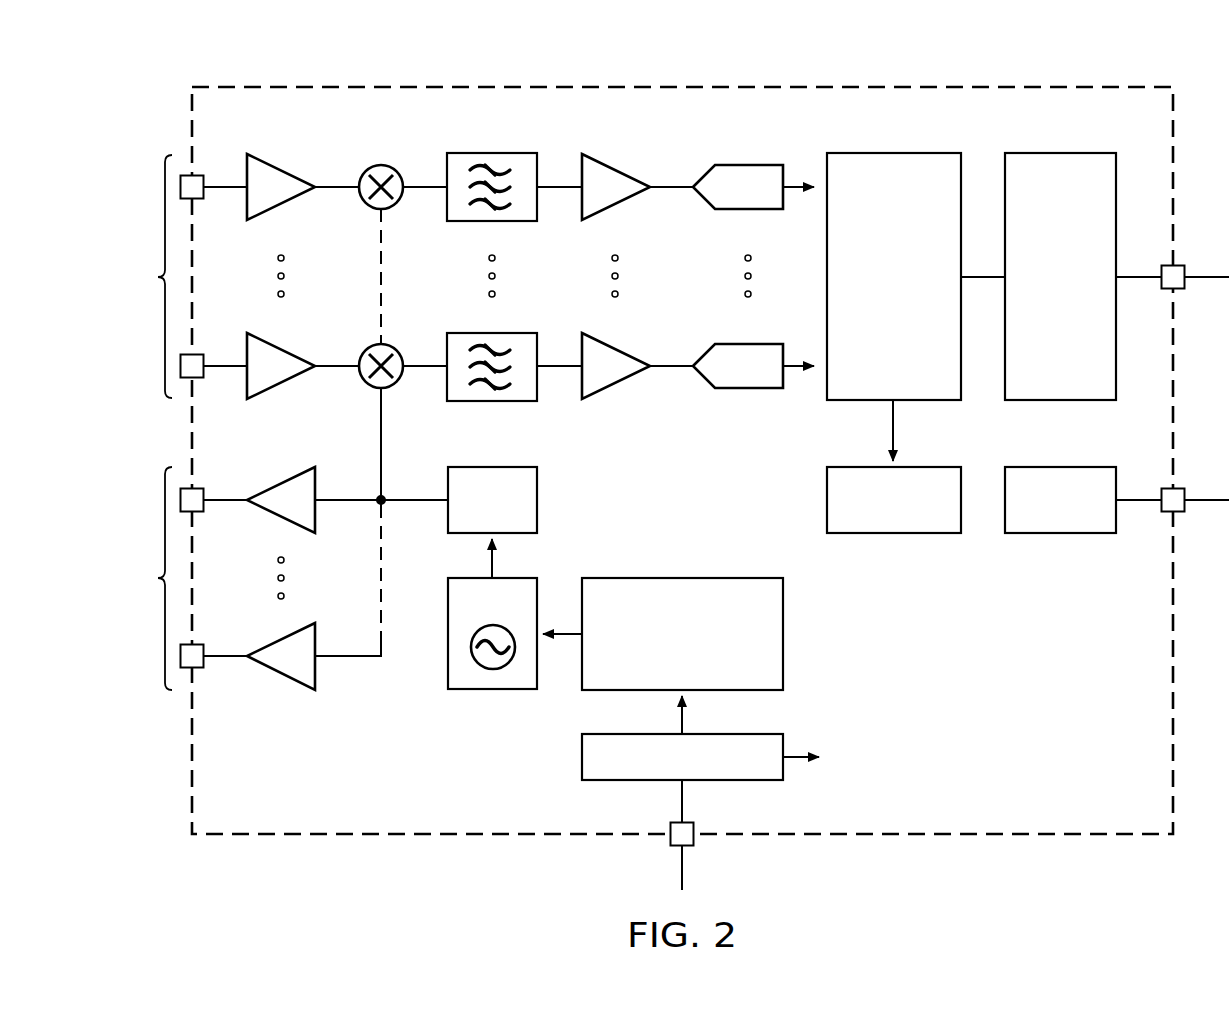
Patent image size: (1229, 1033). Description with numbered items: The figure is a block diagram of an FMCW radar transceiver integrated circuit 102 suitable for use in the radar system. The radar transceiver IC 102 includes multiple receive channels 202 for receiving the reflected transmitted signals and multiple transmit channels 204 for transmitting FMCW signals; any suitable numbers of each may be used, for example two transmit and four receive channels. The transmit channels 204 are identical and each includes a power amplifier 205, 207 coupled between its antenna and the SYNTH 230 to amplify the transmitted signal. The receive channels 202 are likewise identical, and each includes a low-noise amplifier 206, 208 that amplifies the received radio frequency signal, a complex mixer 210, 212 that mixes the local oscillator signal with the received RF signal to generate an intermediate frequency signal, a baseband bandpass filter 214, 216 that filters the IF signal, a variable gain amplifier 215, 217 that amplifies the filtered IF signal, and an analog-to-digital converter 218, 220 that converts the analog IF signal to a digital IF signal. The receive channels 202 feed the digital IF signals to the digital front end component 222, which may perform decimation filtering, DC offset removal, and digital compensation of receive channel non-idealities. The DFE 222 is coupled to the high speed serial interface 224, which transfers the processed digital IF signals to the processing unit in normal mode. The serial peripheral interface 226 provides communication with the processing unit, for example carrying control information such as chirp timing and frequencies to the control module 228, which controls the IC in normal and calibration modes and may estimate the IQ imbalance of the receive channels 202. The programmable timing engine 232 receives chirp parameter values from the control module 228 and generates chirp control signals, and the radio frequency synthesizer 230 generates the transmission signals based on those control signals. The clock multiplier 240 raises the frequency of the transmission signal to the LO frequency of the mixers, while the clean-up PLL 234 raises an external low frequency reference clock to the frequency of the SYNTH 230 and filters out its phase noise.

The radar transceiver integrated circuit 102 is at (414, 82).
The receive channels 202 is at (140, 276).
The transmit channels 204 is at (140, 578).
The power amplifier 205 is at (280, 484).
The low-noise amplifier 206 is at (283, 169).
The power amplifier 207 is at (285, 676).
The low-noise amplifier 208 is at (281, 385).
The complex mixer 210 is at (373, 166).
The complex mixer 212 is at (388, 389).
The baseband bandpass filter 214 is at (490, 153).
The variable gain amplifier 215 is at (620, 172).
The baseband bandpass filter 216 is at (491, 401).
The variable gain amplifier 217 is at (620, 381).
The analog-to-digital converter 218 is at (750, 165).
The analog-to-digital converter 220 is at (750, 389).
The digital front end component 222 is at (893, 153).
The high speed serial interface 224 is at (1062, 153).
The serial peripheral interface 226 is at (1061, 534).
The control module 228 is at (905, 534).
The radio frequency synthesizer 230 is at (482, 690).
The programmable timing engine 232 is at (784, 646).
The clean-up PLL 234 is at (784, 770).
The clock multiplier 240 is at (538, 513).